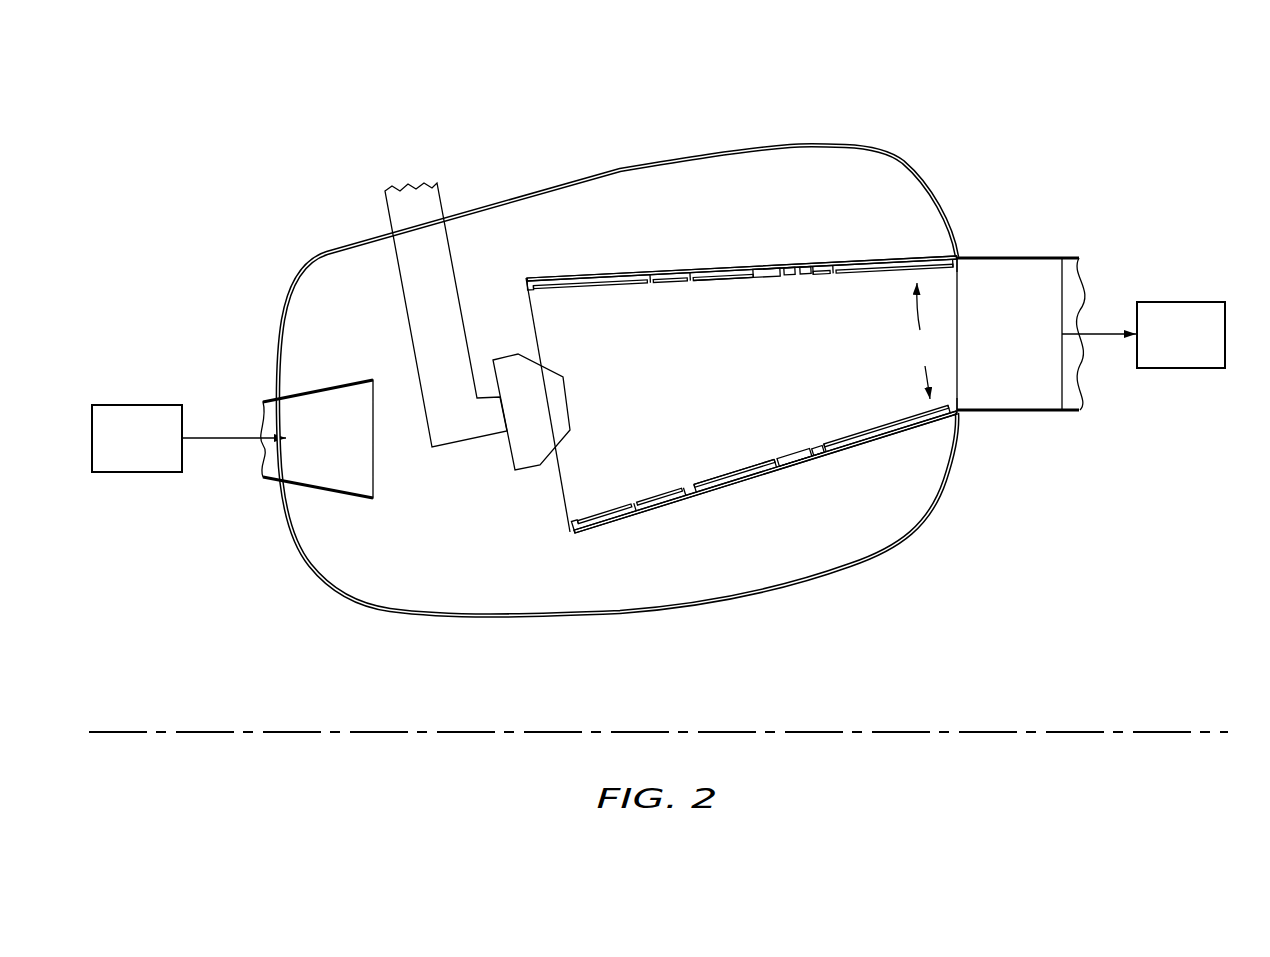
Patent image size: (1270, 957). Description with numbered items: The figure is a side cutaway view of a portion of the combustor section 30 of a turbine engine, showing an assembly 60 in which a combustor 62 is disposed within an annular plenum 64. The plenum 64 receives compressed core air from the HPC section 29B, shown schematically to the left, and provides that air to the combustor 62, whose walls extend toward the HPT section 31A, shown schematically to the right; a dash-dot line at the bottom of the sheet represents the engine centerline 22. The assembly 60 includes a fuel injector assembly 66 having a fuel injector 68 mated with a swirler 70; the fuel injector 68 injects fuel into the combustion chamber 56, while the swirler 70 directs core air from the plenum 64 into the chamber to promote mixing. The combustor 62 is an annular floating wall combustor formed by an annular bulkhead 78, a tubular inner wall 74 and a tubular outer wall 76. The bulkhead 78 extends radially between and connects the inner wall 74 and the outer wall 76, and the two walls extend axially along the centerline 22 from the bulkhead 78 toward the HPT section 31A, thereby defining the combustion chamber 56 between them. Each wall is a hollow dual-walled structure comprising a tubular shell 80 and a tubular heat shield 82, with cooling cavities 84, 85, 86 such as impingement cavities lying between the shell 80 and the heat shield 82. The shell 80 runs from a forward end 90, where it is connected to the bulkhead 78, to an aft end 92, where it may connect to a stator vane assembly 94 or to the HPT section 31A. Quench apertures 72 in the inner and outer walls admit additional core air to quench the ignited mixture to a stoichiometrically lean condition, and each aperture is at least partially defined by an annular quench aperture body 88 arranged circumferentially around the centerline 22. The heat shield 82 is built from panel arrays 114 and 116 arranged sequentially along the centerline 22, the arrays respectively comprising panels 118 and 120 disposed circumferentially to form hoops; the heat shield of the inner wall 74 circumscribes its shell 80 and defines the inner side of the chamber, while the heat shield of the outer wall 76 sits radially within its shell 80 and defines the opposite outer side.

The centerline 22 is at (1112, 730).
The HPC section 29B is at (113, 451).
The HPT section 31A is at (1203, 347).
The combustor section 30 is at (986, 111).
The assembly 60 is at (673, 380).
The combustion chamber 56 is at (719, 387).
The combustor 62 is at (664, 257).
The annular plenum 64 is at (342, 324).
The fuel injector assembly 66 is at (449, 465).
The fuel injector 68 is at (408, 337).
The swirler 70 is at (530, 469).
The quench apertures 72 is at (764, 270).
The combustor inner wall 74 is at (703, 519).
The combustor outer wall 76 is at (617, 259).
The combustor bulkhead 78 is at (565, 503).
The combustor shell 80 is at (892, 262).
The combustor heat shield 82 is at (818, 290).
The cooling cavity 84 is at (594, 287).
The cooling cavity 85 is at (691, 284).
The cooling cavity 86 is at (867, 269).
The quench aperture body 88 is at (754, 270).
The forward end 90 is at (527, 278).
The aft end 92 is at (958, 258).
The stator vane assembly 94 is at (1017, 347).
The panel array 114 is at (657, 293).
The panel array 116 is at (921, 341).
The panels 118 is at (561, 293).
The panels 120 is at (838, 279).